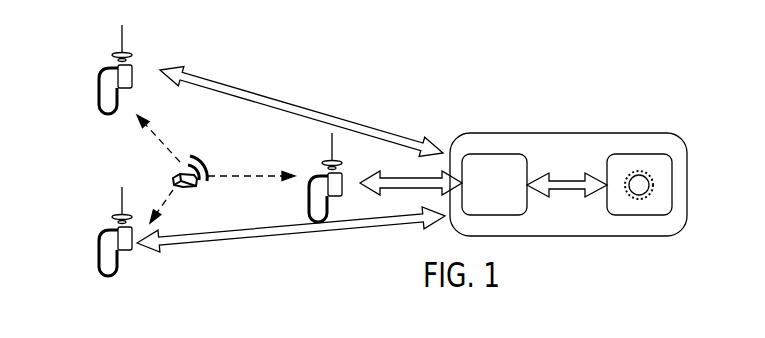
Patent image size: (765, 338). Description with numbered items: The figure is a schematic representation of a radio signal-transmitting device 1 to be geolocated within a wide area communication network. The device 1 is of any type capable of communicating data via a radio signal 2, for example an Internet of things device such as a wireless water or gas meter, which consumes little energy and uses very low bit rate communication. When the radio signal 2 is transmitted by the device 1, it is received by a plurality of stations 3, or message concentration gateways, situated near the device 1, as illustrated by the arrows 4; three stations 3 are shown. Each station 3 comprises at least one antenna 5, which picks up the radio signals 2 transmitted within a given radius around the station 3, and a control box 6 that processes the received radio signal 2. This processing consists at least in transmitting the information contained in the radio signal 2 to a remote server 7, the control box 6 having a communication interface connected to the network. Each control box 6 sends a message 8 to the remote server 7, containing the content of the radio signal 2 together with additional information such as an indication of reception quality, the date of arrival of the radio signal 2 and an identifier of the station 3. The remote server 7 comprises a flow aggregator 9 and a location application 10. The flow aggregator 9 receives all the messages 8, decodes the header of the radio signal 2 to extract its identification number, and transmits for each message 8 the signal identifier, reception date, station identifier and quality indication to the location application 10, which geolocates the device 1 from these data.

The radio signal-transmitting device 1 is at (193, 185).
The radio signal 2 is at (200, 161).
The station 3 is at (148, 62).
The arrows 4 is at (173, 197).
The antenna 5 is at (120, 35).
The control box 6 is at (133, 83).
The remote server 7 is at (569, 125).
The message 8 is at (400, 182).
The flow aggregator 9 is at (495, 154).
The location application 10 is at (640, 154).